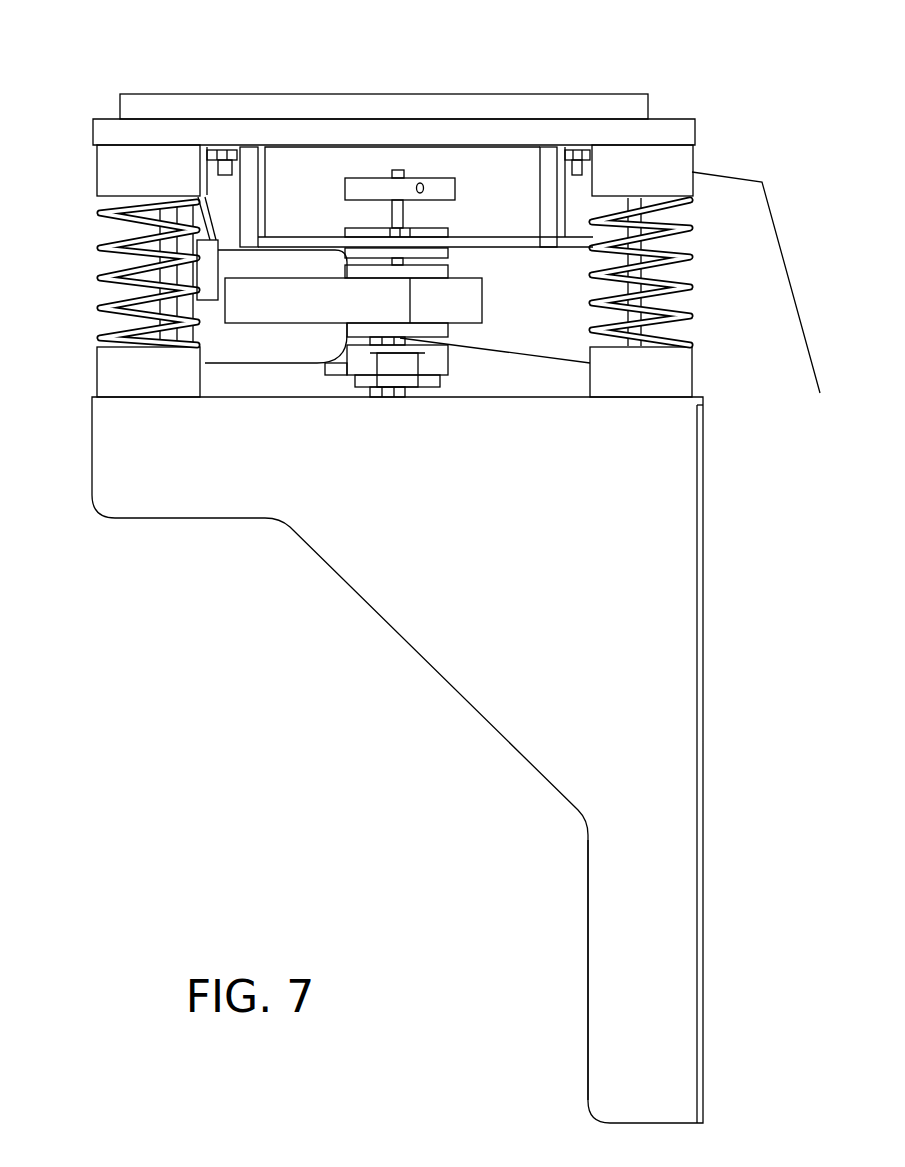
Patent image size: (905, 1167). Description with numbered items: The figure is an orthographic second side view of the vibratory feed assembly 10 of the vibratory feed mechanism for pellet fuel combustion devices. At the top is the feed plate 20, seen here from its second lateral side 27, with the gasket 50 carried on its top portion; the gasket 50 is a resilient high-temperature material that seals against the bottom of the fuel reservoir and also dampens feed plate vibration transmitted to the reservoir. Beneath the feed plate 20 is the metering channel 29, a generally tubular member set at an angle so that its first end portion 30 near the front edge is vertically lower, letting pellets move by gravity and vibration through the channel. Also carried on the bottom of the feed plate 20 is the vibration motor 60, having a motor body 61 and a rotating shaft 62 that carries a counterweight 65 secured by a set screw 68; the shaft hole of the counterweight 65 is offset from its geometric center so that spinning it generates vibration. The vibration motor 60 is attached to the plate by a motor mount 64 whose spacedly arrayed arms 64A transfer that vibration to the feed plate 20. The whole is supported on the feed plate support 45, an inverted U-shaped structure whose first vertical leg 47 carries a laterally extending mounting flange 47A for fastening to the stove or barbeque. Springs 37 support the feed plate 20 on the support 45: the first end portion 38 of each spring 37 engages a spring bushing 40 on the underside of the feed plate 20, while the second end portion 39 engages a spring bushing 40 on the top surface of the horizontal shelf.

The vibratory feed assembly 10 is at (393, 76).
The feed plate 20 is at (678, 100).
The second lateral side 27 is at (290, 128).
The metering channel 29 is at (542, 318).
The first end portion 30 is at (765, 245).
The spring 37 is at (100, 278).
The first end portion 38 is at (100, 213).
The second end portion 39 is at (100, 338).
The spring bushing 40 is at (108, 160).
The feed plate support 45 is at (376, 642).
The first vertical leg 47 is at (632, 866).
The mounting flange 47A is at (705, 735).
The gasket 50 is at (600, 100).
The vibration motor 60 is at (441, 396).
The motor body 61 is at (262, 300).
The rotating shaft 62 is at (403, 208).
The motor mount 64 is at (505, 245).
The arm 64A is at (545, 148).
The counterweight 65 is at (345, 190).
The set screw 68 is at (422, 188).